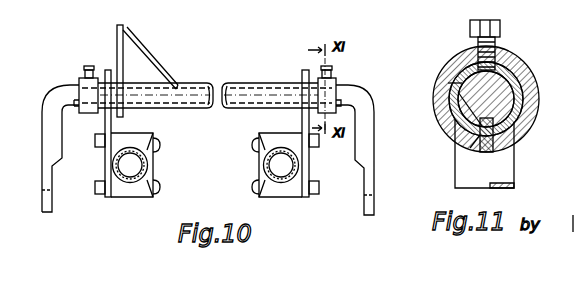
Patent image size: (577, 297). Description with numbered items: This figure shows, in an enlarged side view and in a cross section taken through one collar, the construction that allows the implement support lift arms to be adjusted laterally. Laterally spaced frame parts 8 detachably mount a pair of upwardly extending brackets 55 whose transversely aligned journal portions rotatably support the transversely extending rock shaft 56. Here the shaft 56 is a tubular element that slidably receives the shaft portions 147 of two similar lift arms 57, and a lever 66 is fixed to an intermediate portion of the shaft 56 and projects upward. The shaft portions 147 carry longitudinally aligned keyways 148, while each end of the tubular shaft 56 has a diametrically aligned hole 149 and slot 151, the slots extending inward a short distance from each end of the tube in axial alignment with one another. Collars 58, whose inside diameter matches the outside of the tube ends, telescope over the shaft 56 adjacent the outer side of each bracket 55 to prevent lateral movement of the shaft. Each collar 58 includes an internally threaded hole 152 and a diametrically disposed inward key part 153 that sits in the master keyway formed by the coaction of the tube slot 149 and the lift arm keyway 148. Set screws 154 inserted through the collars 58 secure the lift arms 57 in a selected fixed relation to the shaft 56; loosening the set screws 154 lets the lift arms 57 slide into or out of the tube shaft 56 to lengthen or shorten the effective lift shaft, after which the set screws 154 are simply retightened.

In FIG. 10, the frame parts 8 is at (128, 183).
In FIG. 10, the brackets 55 is at (105, 162).
In FIG. 10, the rock shaft 56 is at (258, 83).
In FIG. 11, the rock shaft 56 is at (521, 83).
In FIG. 10, the lift arms 57 is at (42, 137).
In FIG. 11, the lift arms 57 is at (456, 180).
In FIG. 10, the collars 58 is at (80, 78).
In FIG. 11, the collars 58 is at (530, 128).
In FIG. 10, the lever 66 is at (117, 52).
In FIG. 10, the shaft portions 147 is at (178, 87).
In FIG. 11, the shaft portions 147 is at (512, 100).
In FIG. 10, the keyways 148 is at (170, 108).
In FIG. 11, the keyways 148 is at (486, 99).
In FIG. 11, the hole 149 is at (448, 80).
In FIG. 11, the slot 151 is at (474, 148).
In FIG. 11, the internally threaded hole 152 is at (478, 44).
In FIG. 11, the key part 153 is at (486, 152).
In FIG. 11, the set screws 154 is at (500, 28).